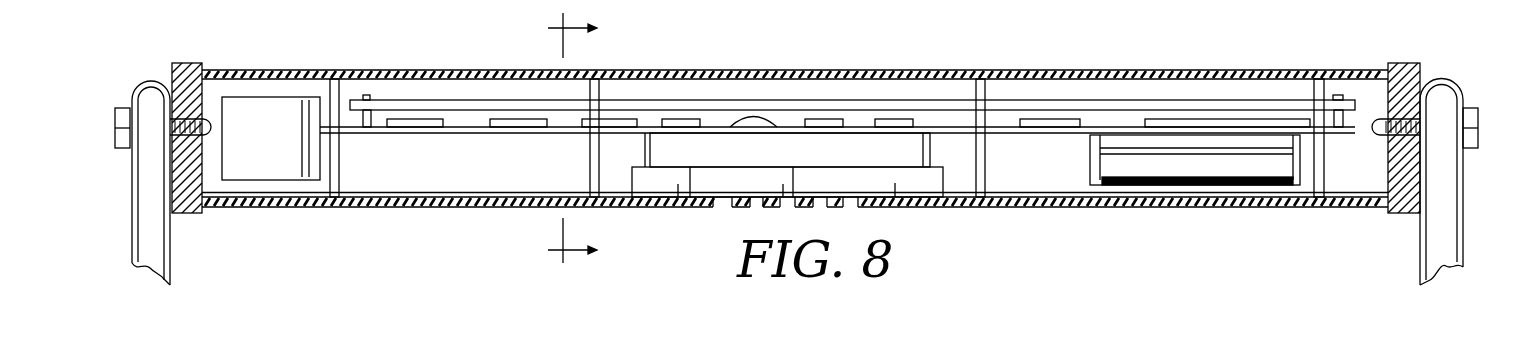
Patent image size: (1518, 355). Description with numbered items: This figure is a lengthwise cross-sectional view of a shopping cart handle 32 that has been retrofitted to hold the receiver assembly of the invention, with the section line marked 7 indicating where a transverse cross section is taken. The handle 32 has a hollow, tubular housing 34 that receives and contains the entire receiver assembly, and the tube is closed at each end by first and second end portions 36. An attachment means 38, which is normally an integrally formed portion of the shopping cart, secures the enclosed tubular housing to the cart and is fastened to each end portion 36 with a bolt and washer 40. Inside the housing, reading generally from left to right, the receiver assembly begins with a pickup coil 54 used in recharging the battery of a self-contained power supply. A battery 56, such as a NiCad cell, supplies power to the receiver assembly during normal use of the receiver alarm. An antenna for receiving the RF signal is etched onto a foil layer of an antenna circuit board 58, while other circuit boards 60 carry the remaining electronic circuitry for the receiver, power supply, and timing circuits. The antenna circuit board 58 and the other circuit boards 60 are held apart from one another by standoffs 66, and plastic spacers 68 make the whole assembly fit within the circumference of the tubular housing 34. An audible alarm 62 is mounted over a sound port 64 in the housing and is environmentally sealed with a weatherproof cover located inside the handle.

The section line 7- 7 is at (569, 141).
The handle 32 is at (394, 57).
The tubular housing 34 is at (818, 71).
The end portions 36 is at (194, 63).
The attachment means 38 is at (172, 233).
The bolt and washer 40 is at (122, 107).
The pickup coil 54 is at (293, 150).
The battery 56 is at (1233, 187).
The antenna circuit board 58 is at (897, 100).
The other circuit boards 60 is at (1117, 127).
The audible alarm 62 is at (945, 182).
The sound port 64 is at (742, 219).
The standoffs 66 is at (365, 137).
The plastic spacers 68 is at (340, 177).